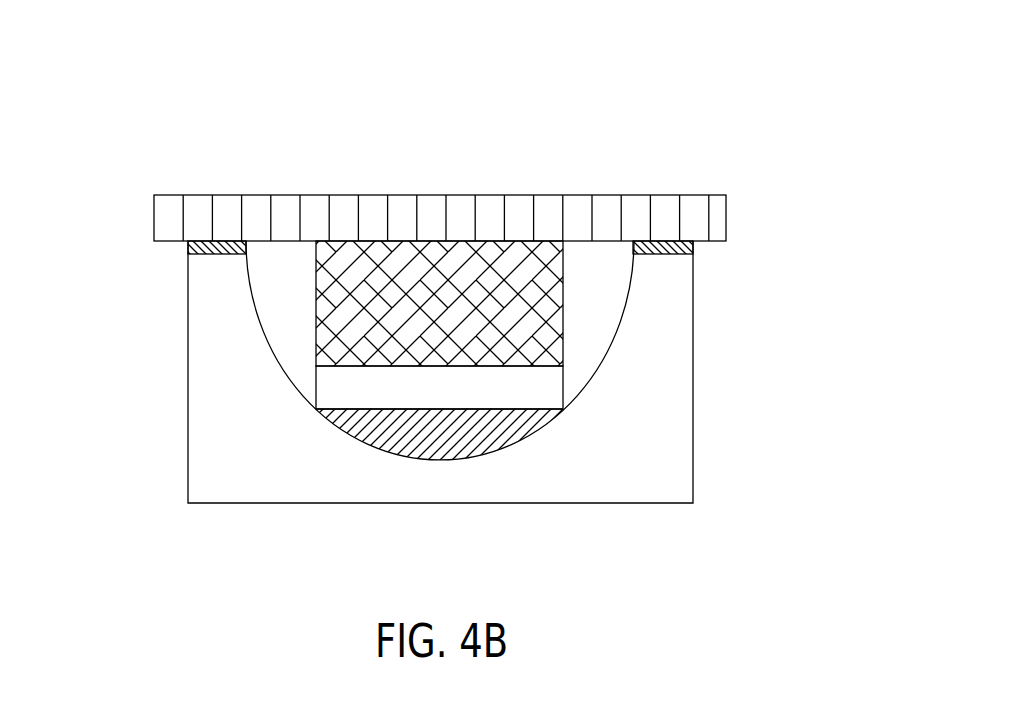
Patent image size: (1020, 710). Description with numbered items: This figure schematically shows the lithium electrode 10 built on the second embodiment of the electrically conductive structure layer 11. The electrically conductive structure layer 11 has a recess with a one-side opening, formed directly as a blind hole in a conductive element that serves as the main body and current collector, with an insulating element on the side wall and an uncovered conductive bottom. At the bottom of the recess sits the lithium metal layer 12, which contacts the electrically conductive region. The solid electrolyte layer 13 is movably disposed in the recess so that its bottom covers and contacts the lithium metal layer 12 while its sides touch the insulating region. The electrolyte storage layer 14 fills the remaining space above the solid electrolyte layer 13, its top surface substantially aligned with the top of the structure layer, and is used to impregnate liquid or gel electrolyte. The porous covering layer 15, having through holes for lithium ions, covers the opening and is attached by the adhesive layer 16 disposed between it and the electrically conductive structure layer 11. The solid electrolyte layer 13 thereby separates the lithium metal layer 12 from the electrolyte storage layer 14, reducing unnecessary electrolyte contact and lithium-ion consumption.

The lithium electrode 10 is at (119, 157).
The electrically conductive structure layer 11 is at (135, 273).
The lithium metal layer 12 is at (485, 450).
The solid electrolyte layer 13 is at (553, 393).
The electrolyte storage layer 14 is at (563, 307).
The porous covering layer 15 is at (726, 215).
The adhesive layer 16 is at (188, 248).